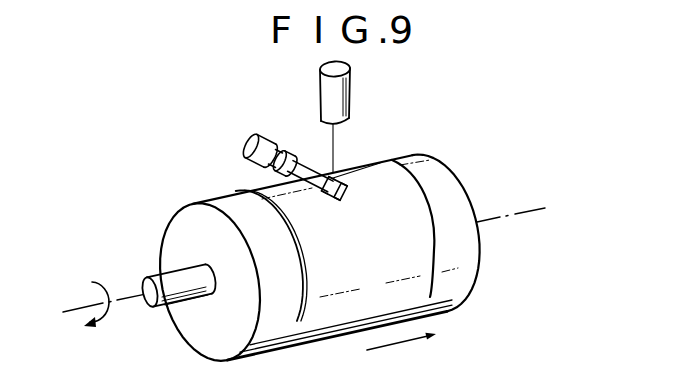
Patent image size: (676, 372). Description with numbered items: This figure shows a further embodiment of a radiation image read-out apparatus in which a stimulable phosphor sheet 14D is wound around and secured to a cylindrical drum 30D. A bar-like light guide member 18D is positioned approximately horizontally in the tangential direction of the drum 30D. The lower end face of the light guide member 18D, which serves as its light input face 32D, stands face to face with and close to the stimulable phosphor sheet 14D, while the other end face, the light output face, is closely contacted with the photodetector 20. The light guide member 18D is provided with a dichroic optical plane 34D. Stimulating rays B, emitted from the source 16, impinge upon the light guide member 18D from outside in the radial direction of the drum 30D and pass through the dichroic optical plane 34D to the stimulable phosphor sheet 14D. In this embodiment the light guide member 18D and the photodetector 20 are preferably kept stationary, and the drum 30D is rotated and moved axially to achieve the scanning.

The laser light source 16 is at (352, 95).
The stimulating rays B is at (336, 133).
The light guide member 18D is at (373, 160).
The photodetector 20 is at (250, 156).
The drum 30D is at (477, 270).
The light input face 32D is at (345, 193).
The dichroic optical plane 34D is at (315, 197).
The stimulable phosphor sheet 14D is at (335, 330).